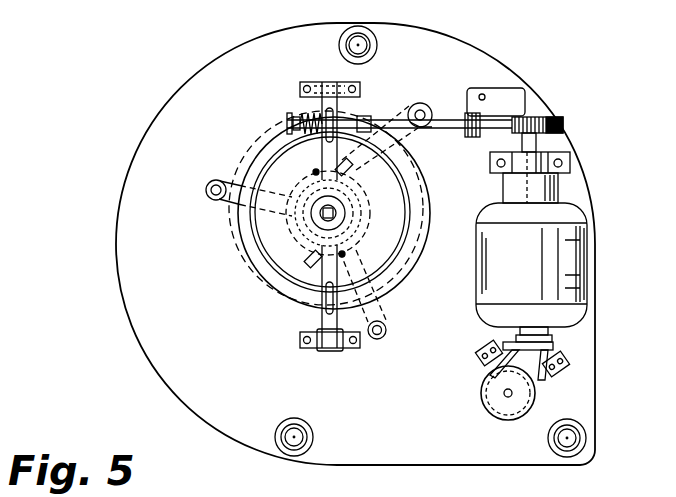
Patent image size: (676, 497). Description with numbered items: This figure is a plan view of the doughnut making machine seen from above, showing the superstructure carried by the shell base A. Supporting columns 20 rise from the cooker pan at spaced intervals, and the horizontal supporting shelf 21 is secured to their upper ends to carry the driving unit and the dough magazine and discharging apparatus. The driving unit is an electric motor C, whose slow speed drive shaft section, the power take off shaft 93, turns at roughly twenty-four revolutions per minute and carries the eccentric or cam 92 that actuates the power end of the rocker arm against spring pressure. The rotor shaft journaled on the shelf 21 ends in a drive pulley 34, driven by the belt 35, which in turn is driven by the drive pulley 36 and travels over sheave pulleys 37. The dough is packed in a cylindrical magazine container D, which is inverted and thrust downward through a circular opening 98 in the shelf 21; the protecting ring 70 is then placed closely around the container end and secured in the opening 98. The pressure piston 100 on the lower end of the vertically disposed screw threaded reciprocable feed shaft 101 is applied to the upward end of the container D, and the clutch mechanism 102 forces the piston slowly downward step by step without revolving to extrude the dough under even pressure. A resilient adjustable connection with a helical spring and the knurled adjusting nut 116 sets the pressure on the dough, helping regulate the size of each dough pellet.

The shell base A is at (330, 244).
The horizontal supporting shelf 21 is at (100, 305).
The supporting columns 20 is at (378, 46).
The ring 70 is at (396, 274).
The circular opening 98 is at (274, 298).
The pressure piston 100 is at (268, 239).
The screw threaded reciprocable feed shaft 101 is at (320, 213).
The container D is at (248, 229).
The clutch mechanism 102 is at (298, 236).
The knurled adjusting nut 116 is at (287, 122).
The eccentric or cam 92 is at (553, 118).
The power take off shaft 93 is at (543, 140).
The electric motor C is at (574, 270).
The drive pulley 36 is at (553, 342).
The sheave pulleys 37 is at (537, 360).
The belt 35 is at (539, 383).
The drive pulley 34 is at (497, 404).